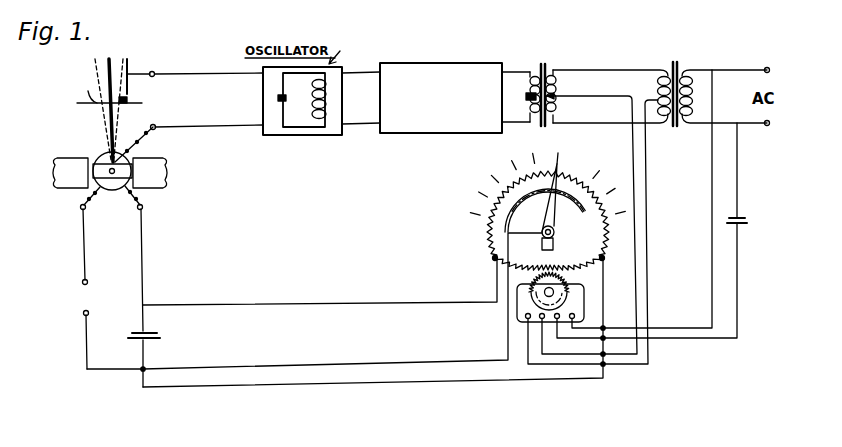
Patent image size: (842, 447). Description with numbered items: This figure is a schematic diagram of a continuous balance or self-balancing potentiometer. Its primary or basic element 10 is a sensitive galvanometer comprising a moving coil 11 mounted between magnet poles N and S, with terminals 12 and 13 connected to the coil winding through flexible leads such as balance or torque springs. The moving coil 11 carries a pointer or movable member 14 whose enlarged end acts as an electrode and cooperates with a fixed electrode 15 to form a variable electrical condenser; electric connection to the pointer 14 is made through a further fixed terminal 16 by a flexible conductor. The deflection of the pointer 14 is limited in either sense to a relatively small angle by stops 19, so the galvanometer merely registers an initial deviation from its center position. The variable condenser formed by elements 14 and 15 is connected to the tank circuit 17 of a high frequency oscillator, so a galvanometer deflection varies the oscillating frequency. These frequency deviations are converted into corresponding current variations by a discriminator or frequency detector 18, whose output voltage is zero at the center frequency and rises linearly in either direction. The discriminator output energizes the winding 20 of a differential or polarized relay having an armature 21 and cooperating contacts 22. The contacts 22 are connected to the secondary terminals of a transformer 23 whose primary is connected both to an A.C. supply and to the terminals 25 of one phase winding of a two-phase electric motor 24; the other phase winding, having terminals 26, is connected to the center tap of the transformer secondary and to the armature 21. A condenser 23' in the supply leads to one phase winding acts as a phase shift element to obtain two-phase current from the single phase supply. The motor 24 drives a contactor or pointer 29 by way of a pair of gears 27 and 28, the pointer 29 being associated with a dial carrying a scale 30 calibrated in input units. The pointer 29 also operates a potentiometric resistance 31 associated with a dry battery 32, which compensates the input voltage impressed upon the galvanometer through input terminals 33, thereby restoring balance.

The primary or basic element 10 is at (94, 150).
The moving coil 11 is at (125, 183).
The terminal 12 is at (80, 208).
The terminal 13 is at (146, 208).
The pointer or movable member 14 is at (116, 129).
The fixed electrode 15 is at (129, 73).
The fixed terminal 16 is at (157, 124).
The tank circuit 17 is at (302, 100).
The discriminator or frequency detector 18 is at (442, 64).
The stops 19 is at (121, 99).
The relay winding 20 is at (543, 74).
The relay armature 21 is at (567, 94).
The relay contacts 22 is at (565, 76).
The transformer 23 is at (613, 203).
The condenser 23' is at (748, 213).
The two-phase electric motor 24 is at (585, 297).
The terminals of one phase winding 25 is at (587, 313).
The terminals of other phase winding 26 is at (520, 314).
The gear 27 is at (517, 285).
The gear 28 is at (525, 272).
The contactor or pointer 29 is at (558, 207).
The scale 30 is at (576, 163).
The potentiometric resistance 31 is at (490, 213).
The dry battery 32 is at (136, 332).
The input terminals 33 is at (84, 298).